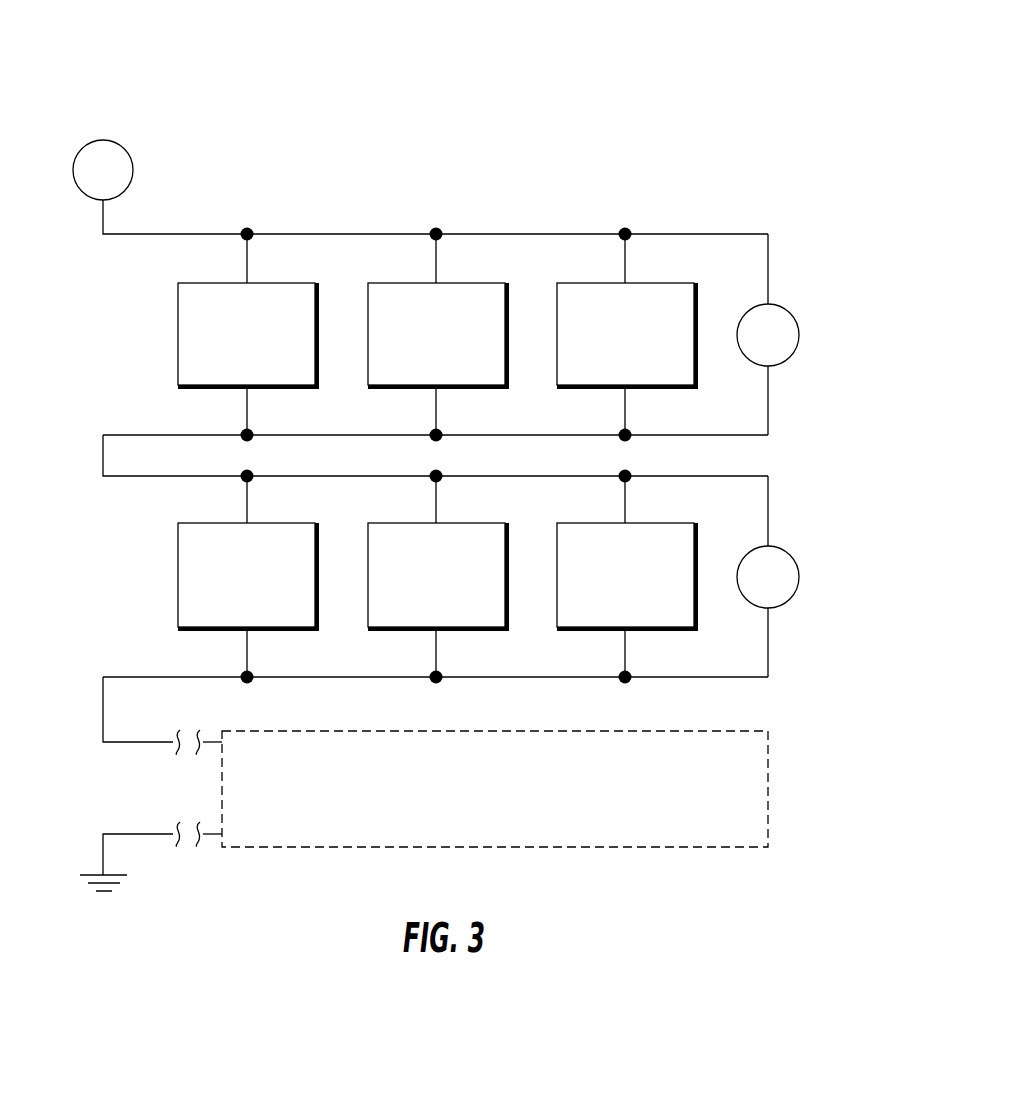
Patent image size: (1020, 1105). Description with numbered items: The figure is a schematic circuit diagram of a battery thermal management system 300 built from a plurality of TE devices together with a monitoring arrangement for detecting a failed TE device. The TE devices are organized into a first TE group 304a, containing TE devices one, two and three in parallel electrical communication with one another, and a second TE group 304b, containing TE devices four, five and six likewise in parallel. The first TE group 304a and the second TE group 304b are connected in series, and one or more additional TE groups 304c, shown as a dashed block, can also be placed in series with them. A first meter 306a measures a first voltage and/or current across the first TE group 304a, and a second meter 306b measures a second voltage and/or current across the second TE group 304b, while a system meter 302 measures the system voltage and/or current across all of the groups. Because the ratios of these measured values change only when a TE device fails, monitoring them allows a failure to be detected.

The battery thermal management system 300 is at (596, 125).
The system meter 302 is at (125, 146).
The first TE group 304a is at (120, 283).
The second TE group 304b is at (120, 523).
The additional TE groups 304c is at (659, 729).
The first meter 306a is at (790, 311).
The second meter 306b is at (790, 552).